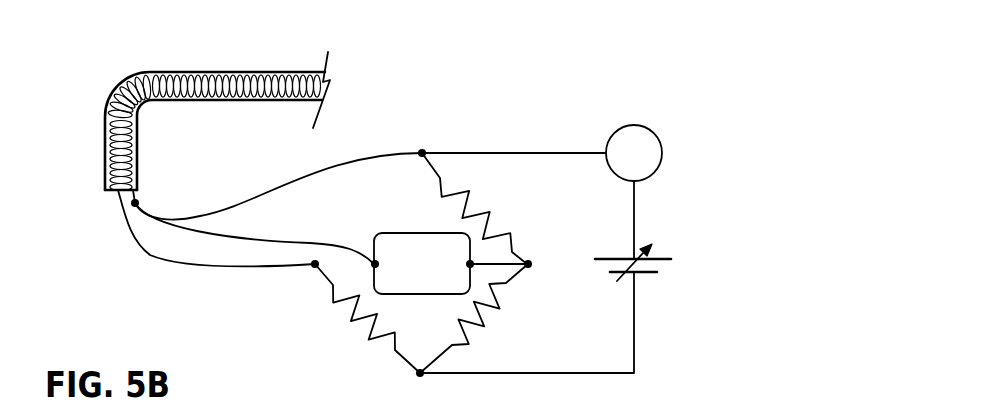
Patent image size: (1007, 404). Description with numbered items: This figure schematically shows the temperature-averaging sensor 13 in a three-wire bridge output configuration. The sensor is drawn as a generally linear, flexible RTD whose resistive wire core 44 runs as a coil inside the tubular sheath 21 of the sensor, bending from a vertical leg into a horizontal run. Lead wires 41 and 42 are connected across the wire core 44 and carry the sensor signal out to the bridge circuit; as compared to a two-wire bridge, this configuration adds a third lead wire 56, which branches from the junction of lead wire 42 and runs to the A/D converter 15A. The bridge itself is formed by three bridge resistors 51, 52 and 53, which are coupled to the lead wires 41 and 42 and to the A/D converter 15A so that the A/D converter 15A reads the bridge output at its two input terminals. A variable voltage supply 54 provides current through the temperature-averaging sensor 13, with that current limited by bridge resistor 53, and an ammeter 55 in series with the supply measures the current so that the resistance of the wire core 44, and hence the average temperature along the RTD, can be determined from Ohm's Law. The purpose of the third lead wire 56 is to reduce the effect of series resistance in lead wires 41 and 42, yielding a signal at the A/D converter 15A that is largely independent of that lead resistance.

The temperature-averaging sensor 13 is at (188, 119).
The probe housing/tube 21 is at (95, 152).
The wire core 44 is at (238, 68).
The lead wire 42 is at (178, 208).
The third lead wire 56 is at (265, 225).
The lead wire 41 is at (133, 251).
The A/D converter 15A is at (388, 233).
The bridge resistor 51 is at (508, 210).
The bridge resistor 52 is at (498, 330).
The bridge resistor 53 is at (352, 346).
The ammeter 55 is at (614, 133).
The variable voltage supply 54 is at (680, 290).